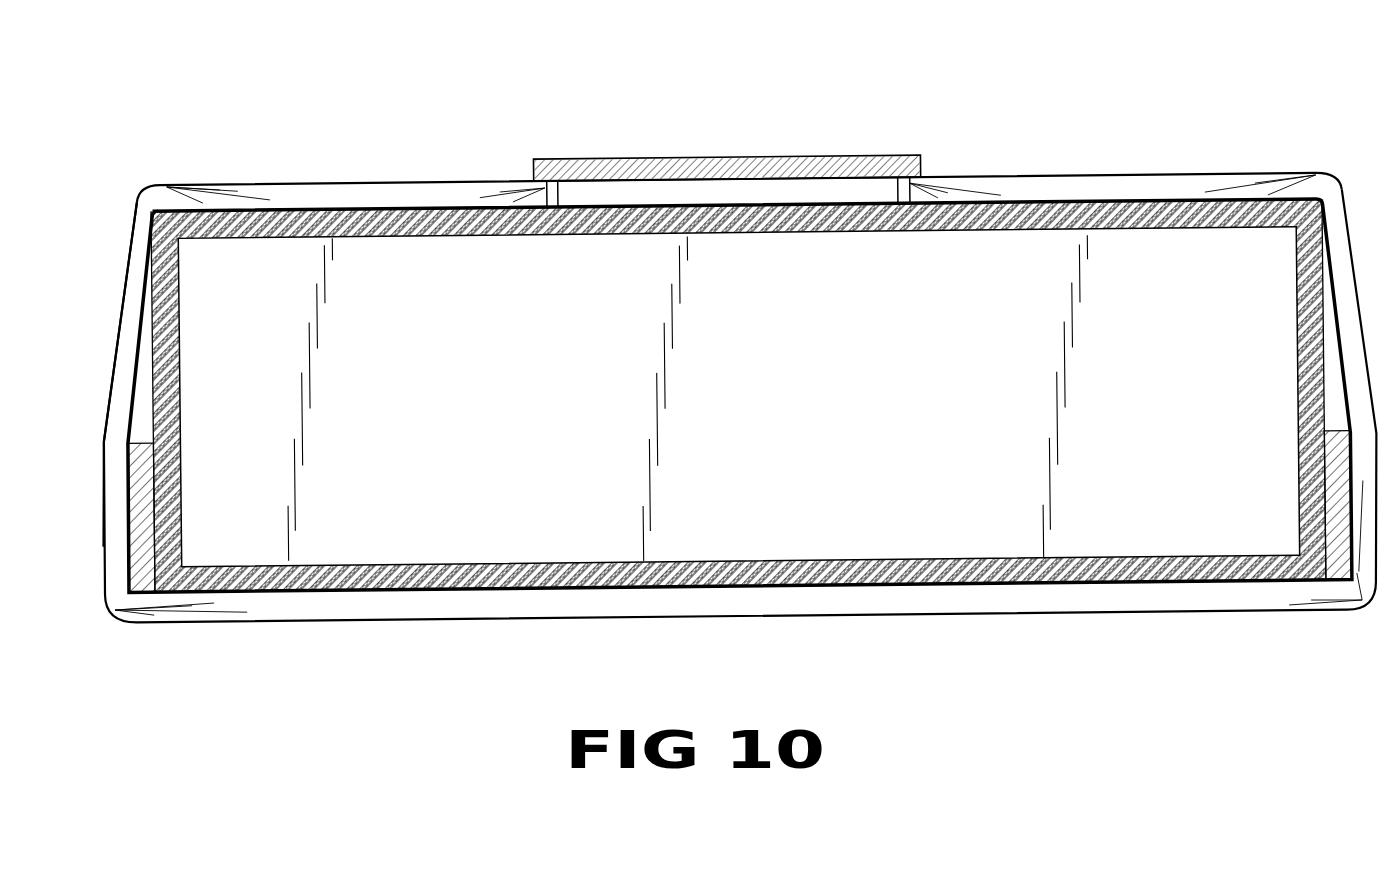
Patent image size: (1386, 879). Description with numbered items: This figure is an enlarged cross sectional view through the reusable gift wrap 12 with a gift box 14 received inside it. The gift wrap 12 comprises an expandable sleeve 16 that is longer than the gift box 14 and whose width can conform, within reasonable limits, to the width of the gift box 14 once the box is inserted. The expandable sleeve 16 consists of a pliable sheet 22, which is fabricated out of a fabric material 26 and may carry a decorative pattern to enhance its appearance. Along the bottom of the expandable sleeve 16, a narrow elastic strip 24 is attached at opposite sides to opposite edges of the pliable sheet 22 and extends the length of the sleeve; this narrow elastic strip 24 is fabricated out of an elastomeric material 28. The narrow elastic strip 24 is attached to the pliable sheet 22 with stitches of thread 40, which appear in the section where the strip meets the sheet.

The reusable gift wrap 12 is at (1140, 110).
The gift box 14 is at (180, 473).
The expandable sleeve 16 is at (106, 391).
The pliable sheet 22 is at (1165, 186).
The narrow elastic strip 24 is at (768, 157).
The fabric material 26 is at (360, 193).
The elastomeric material 28 is at (605, 165).
The stitches of thread 40 is at (549, 158).